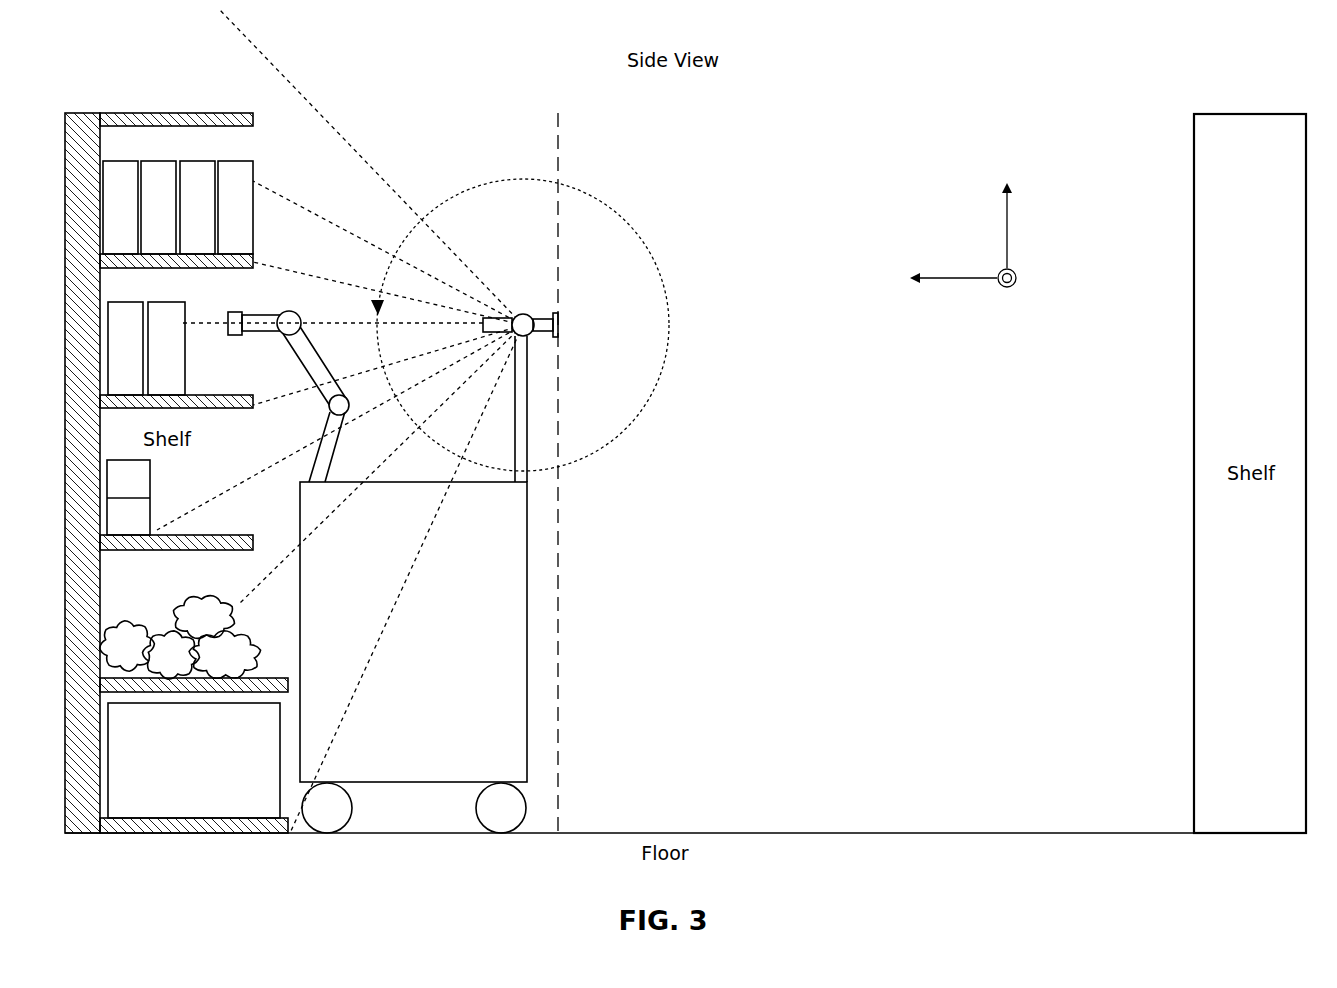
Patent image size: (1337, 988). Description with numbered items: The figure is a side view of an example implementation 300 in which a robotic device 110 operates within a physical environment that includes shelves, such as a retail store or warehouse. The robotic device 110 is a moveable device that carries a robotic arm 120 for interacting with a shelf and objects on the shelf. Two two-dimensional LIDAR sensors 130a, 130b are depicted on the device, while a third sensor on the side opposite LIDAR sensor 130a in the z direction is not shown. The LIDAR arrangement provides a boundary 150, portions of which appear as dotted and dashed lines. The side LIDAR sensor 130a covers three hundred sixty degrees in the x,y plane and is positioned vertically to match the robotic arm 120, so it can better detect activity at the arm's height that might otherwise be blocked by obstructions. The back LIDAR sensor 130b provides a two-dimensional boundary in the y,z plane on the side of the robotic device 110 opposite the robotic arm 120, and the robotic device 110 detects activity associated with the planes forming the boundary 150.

The example implementation 300 is at (178, 42).
The robotic device 110 is at (413, 657).
The robotic arm 120 is at (237, 311).
The LIDAR sensor 130a is at (518, 313).
The LIDAR sensor 130b is at (558, 327).
The boundary 150 is at (558, 172).